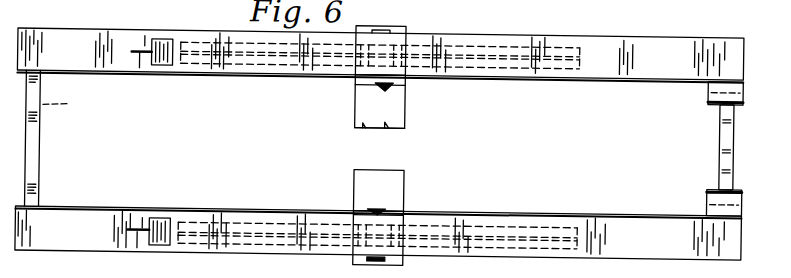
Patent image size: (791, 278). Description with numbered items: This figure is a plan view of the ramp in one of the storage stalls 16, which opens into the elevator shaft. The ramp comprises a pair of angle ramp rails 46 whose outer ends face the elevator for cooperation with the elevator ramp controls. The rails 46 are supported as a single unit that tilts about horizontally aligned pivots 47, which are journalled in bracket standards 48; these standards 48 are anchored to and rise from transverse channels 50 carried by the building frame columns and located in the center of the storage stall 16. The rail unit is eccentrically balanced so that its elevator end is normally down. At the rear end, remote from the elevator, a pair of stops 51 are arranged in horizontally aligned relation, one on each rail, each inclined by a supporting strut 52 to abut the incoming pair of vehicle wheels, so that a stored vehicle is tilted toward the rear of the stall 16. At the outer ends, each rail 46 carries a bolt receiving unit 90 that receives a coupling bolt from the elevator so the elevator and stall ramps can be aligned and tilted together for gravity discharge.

The storage stall 16 is at (360, 150).
The angle ramp rails 46 is at (379, 144).
The pivots 47 is at (381, 78).
The bracket standards 48 is at (399, 75).
The transverse channels 50 is at (408, 121).
The stops 51 is at (166, 224).
The supporting strut 52 is at (143, 236).
The bolt receiving unit 90 is at (713, 96).